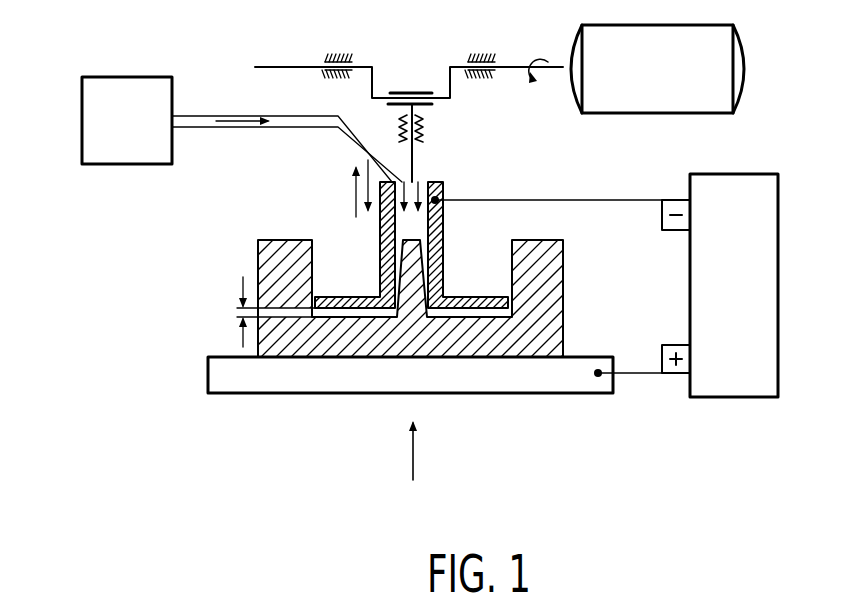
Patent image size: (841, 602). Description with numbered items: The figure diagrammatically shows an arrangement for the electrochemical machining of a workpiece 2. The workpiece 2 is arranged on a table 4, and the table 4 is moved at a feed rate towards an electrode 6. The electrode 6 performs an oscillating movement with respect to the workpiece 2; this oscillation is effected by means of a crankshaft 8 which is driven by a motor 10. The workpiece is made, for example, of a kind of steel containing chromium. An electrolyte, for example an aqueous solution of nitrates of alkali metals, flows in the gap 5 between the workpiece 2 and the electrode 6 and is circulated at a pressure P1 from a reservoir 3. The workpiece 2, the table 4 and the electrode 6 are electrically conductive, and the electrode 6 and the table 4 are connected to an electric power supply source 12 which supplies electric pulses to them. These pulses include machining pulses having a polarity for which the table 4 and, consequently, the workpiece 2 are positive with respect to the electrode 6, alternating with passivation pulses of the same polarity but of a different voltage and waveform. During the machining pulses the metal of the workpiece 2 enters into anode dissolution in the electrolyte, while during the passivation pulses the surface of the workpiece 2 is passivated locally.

The workpiece 2 is at (278, 250).
The reservoir 3 is at (82, 132).
The table 4 is at (541, 385).
The gap 5 is at (243, 312).
The electrode 6 is at (443, 192).
The crankshaft 8 is at (354, 66).
The motor 10 is at (650, 105).
The electric power supply source 12 is at (770, 277).
The pressure P1 is at (305, 118).